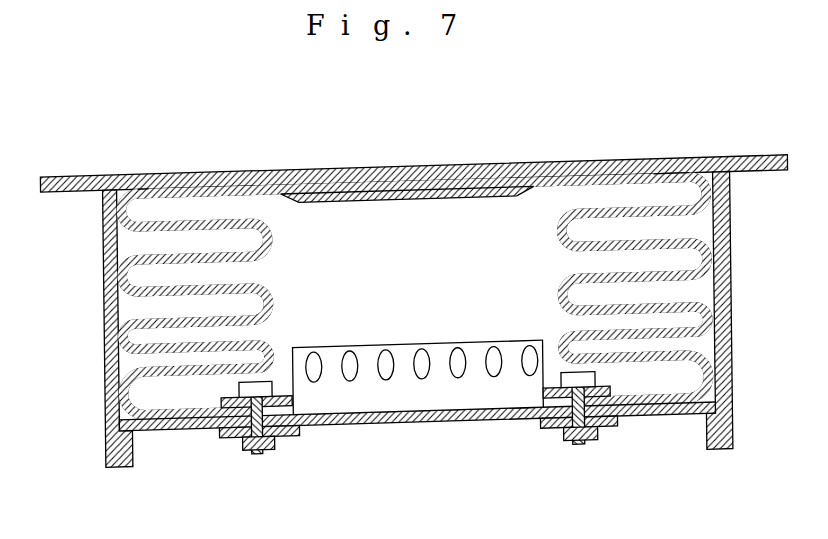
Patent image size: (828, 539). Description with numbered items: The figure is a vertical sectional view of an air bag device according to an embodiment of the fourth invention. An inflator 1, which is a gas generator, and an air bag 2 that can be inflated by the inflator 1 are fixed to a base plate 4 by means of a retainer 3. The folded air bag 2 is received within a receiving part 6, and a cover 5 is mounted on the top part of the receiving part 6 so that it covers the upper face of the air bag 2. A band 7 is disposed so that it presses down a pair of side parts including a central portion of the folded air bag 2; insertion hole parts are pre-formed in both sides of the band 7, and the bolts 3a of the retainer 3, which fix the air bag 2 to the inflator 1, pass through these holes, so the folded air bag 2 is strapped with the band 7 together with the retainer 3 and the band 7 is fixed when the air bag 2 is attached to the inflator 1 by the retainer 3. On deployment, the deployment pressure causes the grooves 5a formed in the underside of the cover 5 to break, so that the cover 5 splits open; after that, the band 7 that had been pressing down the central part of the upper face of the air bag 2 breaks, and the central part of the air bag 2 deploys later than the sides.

The inflator 1 is at (420, 402).
The air bag 2 is at (120, 366).
The retainer 3 is at (229, 393).
The bolts 3a is at (262, 452).
The base plate 4 is at (675, 422).
The cover 5 is at (455, 166).
The grooves 5a is at (167, 181).
The receiving part 6 is at (104, 254).
The band 7 is at (398, 197).